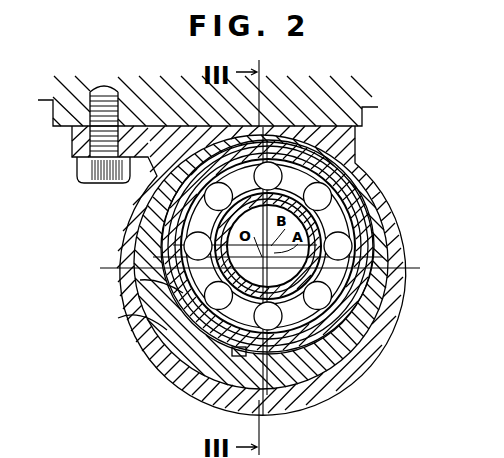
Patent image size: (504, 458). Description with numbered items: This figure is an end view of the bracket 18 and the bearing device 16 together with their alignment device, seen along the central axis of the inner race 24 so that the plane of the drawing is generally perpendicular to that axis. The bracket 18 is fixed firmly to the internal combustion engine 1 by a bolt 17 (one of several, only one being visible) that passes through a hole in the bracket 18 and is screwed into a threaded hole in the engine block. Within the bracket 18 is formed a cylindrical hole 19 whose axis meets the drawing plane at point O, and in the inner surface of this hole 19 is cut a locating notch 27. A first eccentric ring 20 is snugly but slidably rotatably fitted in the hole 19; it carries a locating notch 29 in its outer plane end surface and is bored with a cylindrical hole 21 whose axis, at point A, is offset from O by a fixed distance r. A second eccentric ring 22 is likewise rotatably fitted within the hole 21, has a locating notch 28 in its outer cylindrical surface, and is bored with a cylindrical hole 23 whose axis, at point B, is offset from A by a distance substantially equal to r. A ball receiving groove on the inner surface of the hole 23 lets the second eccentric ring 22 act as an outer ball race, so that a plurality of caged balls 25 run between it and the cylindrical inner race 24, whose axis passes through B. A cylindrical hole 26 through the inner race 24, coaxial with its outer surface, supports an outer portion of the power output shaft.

The internal combustion engine 1 is at (58, 114).
The bearing device 16 is at (364, 160).
The bolt 17 is at (97, 182).
The bracket 18 is at (168, 369).
The cylindrical hole 19 is at (143, 352).
The first eccentric ring 20 is at (343, 362).
The cylindrical hole 21 is at (125, 329).
The second eccentric ring 22 is at (310, 388).
The cylindrical hole 23 is at (122, 300).
The inner race 24 is at (360, 187).
The balls 25 is at (356, 280).
The cylindrical hole 26 is at (368, 214).
The locating notch 27 is at (268, 406).
The locating notch 28 is at (243, 382).
The locating notch 29 is at (204, 385).